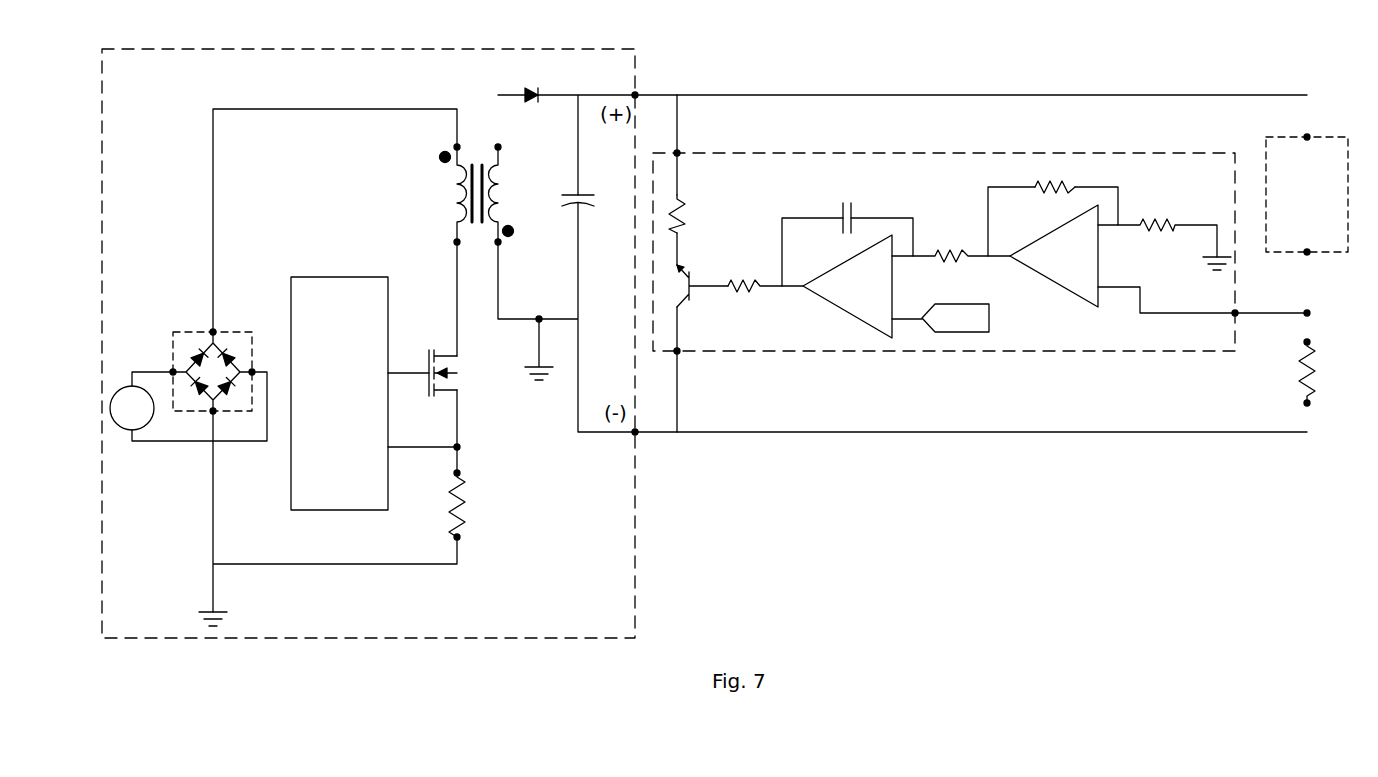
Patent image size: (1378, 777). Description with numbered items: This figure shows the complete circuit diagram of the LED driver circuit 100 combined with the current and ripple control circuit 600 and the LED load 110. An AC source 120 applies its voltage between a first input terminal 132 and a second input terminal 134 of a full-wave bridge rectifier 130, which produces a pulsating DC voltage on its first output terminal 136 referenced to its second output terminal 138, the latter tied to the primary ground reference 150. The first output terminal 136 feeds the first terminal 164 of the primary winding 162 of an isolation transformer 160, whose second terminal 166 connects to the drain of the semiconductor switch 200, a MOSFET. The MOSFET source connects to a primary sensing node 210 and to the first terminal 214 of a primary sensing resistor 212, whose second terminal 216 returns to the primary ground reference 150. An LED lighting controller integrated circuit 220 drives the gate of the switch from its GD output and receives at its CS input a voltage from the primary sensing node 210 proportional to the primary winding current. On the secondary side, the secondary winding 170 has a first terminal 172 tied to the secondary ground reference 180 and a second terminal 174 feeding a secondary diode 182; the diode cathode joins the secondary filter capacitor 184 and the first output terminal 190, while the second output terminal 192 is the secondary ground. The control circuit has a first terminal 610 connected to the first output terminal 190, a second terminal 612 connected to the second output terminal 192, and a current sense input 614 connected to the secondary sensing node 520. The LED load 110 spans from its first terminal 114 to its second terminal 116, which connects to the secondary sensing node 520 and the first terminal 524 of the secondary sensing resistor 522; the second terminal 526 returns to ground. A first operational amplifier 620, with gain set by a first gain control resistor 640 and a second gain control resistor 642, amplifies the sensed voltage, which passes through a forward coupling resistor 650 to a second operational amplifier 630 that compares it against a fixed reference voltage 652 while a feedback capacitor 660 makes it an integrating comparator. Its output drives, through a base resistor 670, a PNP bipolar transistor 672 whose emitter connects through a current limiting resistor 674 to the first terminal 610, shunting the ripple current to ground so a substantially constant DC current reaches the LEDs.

The LED driver circuit 100 is at (162, 85).
The LED load 110 is at (1307, 137).
The first (+) LED load terminal 114 is at (1307, 137).
The second (−) LED load terminal 116 is at (1307, 252).
The AC source 120 is at (123, 427).
The full-wave bridge rectifier 130 is at (205, 332).
The first input terminal 132 is at (173, 372).
The second input terminal 134 is at (252, 372).
The first (+) output terminal 136 is at (213, 332).
The second (−) output terminal 138 is at (213, 411).
The primary ground reference 150 is at (216, 612).
The isolation transformer 160 is at (476, 172).
The primary winding 162 is at (460, 190).
The first terminal of the primary winding 164 is at (457, 147).
The second terminal of the primary winding 166 is at (457, 242).
The secondary winding 170 is at (520, 205).
The first terminal of the secondary winding 172 is at (498, 147).
The second terminal of the secondary winding 174 is at (498, 242).
The secondary ground reference 180 is at (537, 366).
The secondary diode 182 is at (534, 103).
The secondary filter capacitor 184 is at (564, 204).
The first (+) output terminal 190 is at (635, 95).
The second (−) output terminal 192 is at (635, 432).
The semiconductor switch 200 is at (430, 355).
The primary sensing node 210 is at (457, 447).
The primary sensing resistor 212 is at (457, 522).
The first terminal of the primary sensing resistor 214 is at (457, 473).
The second terminal of the primary sensing resistor 216 is at (457, 537).
The LED lighting controller integrated circuit 220 is at (361, 501).
The secondary sensing node 520 is at (1307, 313).
The secondary sensing resistor 522 is at (1305, 370).
The first terminal of the secondary sensing resistor 524 is at (1307, 342).
The second terminal of the secondary sensing resistor 526 is at (1307, 403).
The current and ripple control circuit 600 is at (815, 178).
The first (+) terminal 610 is at (677, 153).
The second (−) terminal 612 is at (677, 351).
The current sense (CS) input 614 is at (1235, 313).
The first operational amplifier 620 is at (1098, 278).
The second operational amplifier 630 is at (892, 312).
The first gain control resistor 640 is at (1155, 222).
The second gain control resistor 642 is at (1050, 184).
The forward coupling resistor 650 is at (945, 260).
The fixed reference voltage 652 is at (989, 316).
The feedback capacitor 660 is at (848, 212).
The base resistor 670 is at (745, 290).
The PNP bipolar transistor 672 is at (690, 280).
The current limiting resistor 674 is at (679, 215).